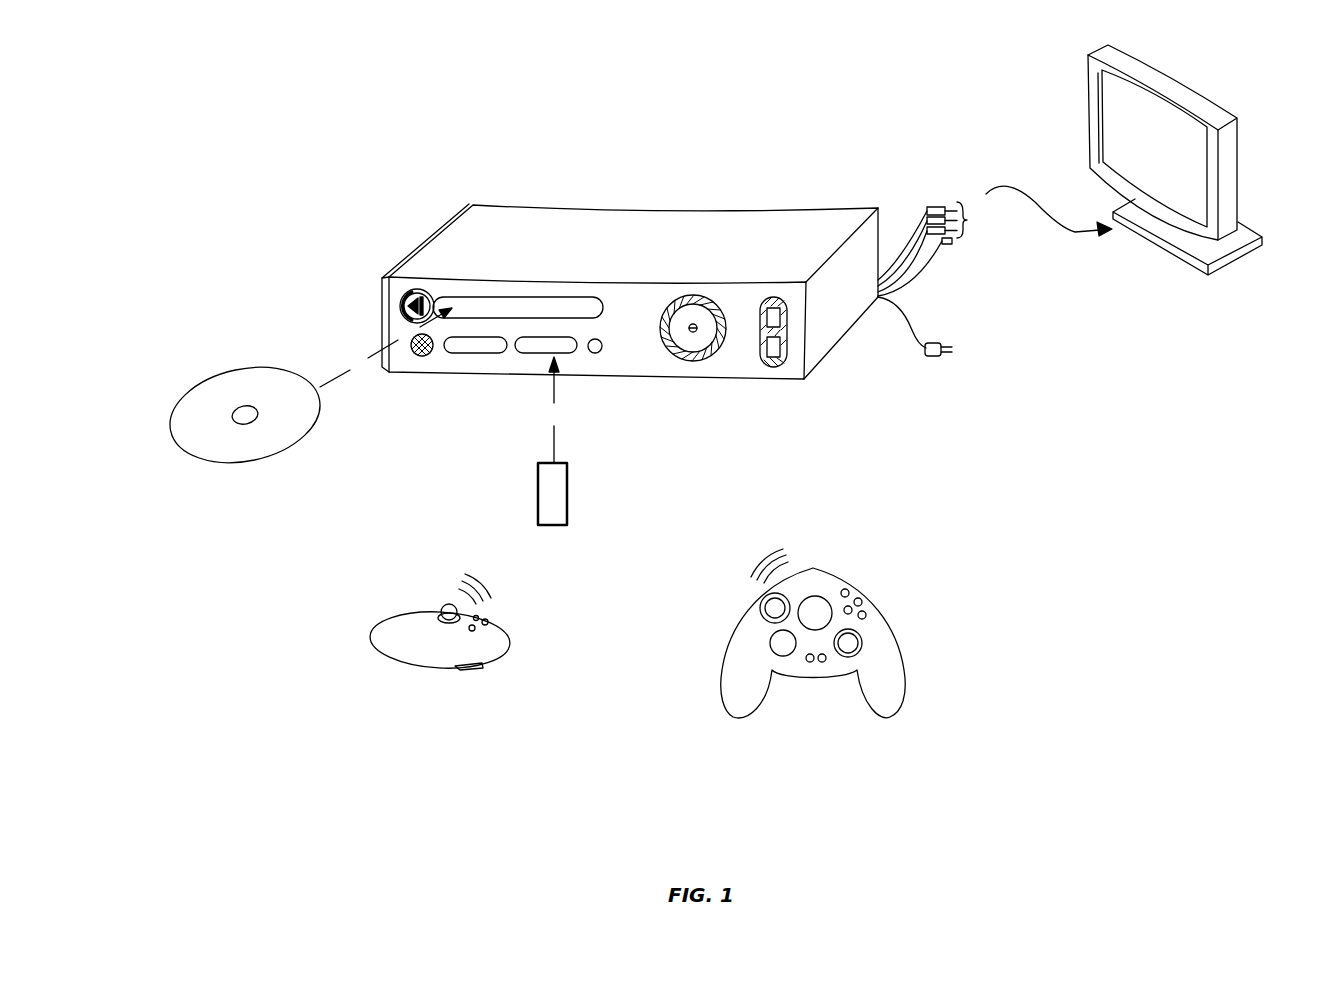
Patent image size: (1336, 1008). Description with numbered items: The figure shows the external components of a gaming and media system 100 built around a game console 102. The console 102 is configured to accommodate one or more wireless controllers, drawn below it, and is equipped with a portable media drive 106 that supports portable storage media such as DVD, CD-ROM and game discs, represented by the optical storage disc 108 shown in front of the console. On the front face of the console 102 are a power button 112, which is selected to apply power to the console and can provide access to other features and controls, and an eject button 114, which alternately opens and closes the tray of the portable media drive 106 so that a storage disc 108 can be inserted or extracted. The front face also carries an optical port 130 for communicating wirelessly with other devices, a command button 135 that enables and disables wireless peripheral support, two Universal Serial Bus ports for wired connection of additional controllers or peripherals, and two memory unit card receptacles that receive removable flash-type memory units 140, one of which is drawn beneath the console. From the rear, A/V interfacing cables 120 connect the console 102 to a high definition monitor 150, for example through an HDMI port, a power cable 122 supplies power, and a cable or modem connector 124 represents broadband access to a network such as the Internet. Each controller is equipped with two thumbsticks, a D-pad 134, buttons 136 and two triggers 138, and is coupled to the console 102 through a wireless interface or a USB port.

The gaming and media system 100 is at (666, 163).
The game console 102 is at (505, 213).
The portable media drive 106 is at (524, 296).
The optical storage disc 108 is at (255, 463).
The power button 112 is at (693, 355).
The eject button 114 is at (410, 302).
The A/V interfacing cables 120 is at (937, 205).
The power cable 122 is at (934, 357).
The cable or modem connector 124 is at (947, 246).
The optical port 130 is at (420, 357).
The D-pad 134 is at (771, 645).
The command button 135 is at (594, 354).
The buttons 136 is at (862, 602).
The triggers 138 is at (482, 680).
The removable flash-type memory unit 140 is at (552, 525).
The high definition monitor 150 is at (1088, 115).